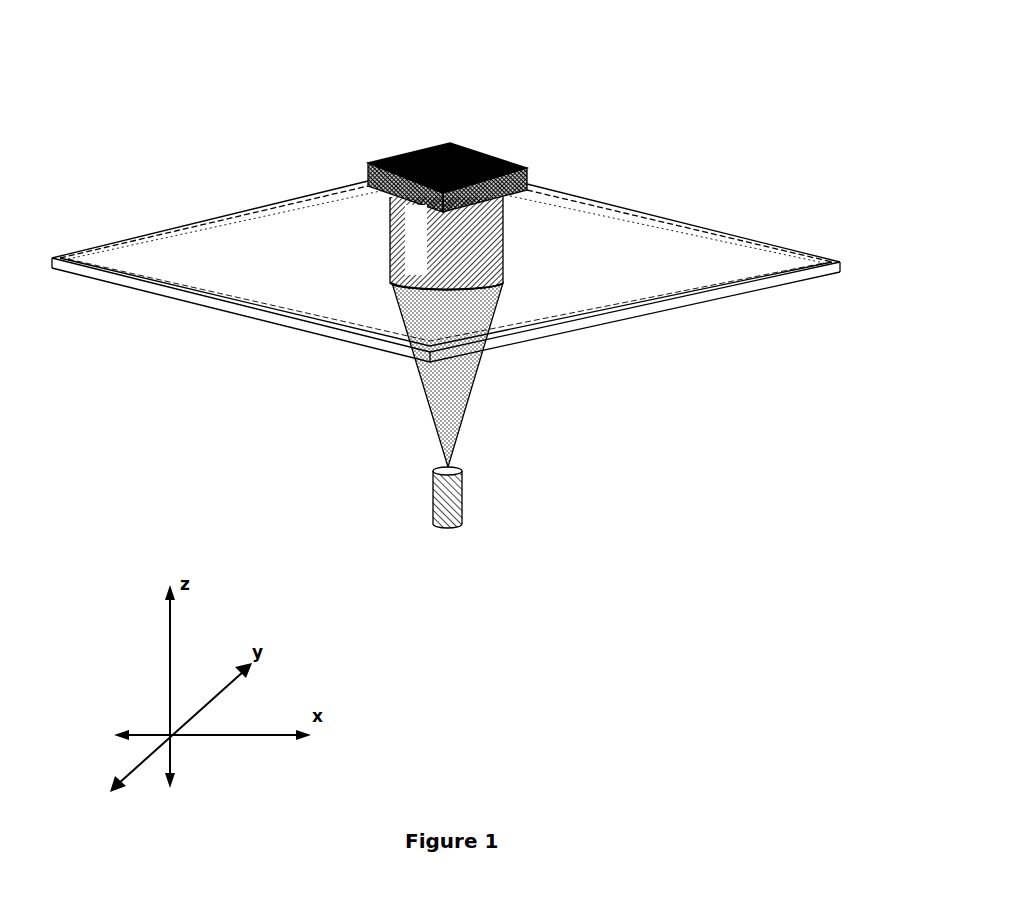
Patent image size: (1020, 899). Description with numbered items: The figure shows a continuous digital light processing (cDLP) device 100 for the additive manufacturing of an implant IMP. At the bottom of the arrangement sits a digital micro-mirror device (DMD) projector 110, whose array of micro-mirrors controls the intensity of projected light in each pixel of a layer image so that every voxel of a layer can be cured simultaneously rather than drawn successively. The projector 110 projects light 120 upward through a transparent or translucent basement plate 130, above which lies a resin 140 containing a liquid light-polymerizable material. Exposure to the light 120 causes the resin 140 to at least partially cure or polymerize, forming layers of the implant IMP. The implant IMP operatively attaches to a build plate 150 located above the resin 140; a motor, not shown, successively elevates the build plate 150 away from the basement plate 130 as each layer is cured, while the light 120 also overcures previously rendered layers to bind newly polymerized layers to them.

The continuous digital light processing (cDLP) device 100 is at (594, 90).
The digital micro-mirror device (DMD) projector 110 is at (450, 490).
The light 120 is at (441, 396).
The basement plate 130 is at (150, 288).
The resin 140 is at (630, 232).
The build plate 150 is at (433, 146).
The implant IMP is at (410, 217).